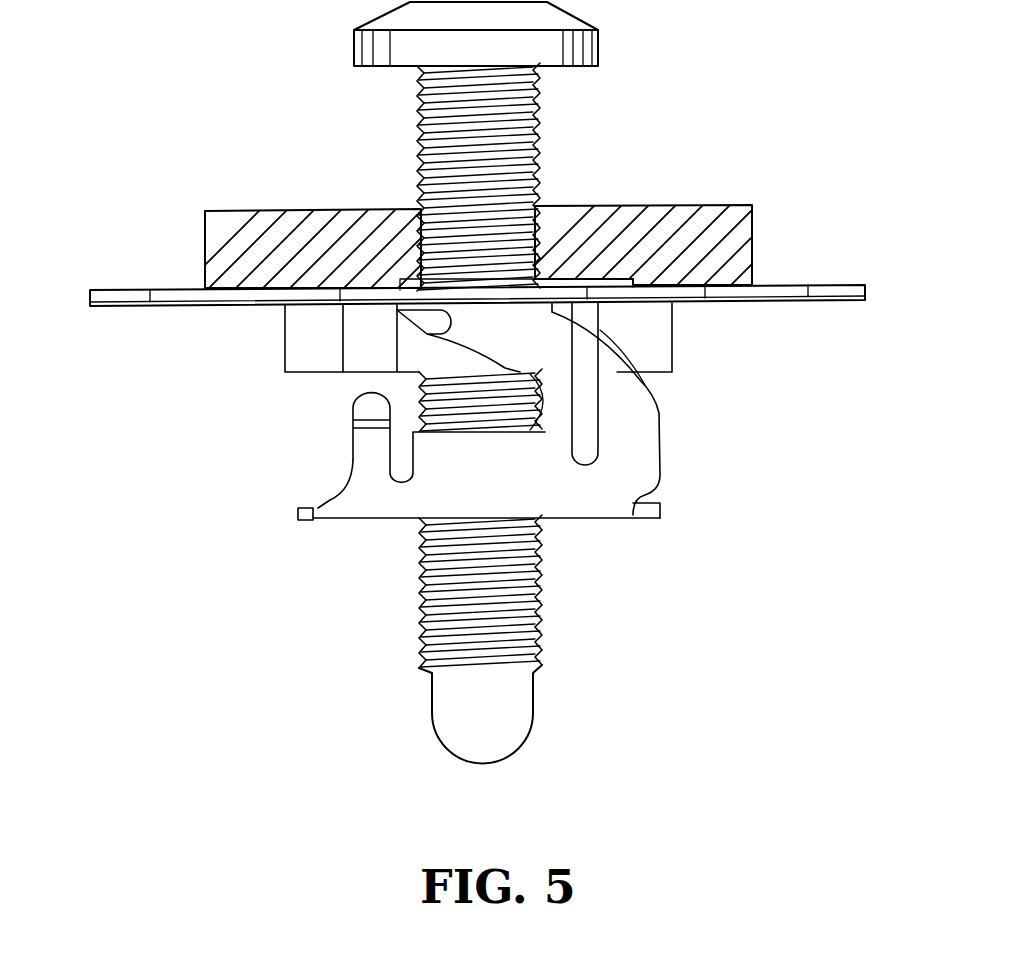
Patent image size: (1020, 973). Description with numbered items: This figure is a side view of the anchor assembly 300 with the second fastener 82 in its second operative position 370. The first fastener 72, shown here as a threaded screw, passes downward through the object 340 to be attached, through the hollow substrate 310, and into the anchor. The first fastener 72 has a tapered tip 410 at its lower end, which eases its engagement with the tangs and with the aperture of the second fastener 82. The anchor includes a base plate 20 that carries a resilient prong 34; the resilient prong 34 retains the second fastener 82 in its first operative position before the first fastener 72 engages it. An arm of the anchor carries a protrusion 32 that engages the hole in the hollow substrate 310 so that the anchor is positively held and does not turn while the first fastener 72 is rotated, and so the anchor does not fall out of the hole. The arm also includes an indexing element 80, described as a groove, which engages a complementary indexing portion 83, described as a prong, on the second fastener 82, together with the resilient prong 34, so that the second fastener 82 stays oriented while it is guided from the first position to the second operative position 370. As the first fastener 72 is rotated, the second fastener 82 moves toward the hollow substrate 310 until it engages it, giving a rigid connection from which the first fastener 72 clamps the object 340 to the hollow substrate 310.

The anchor assembly 300 is at (818, 86).
The first fastener 72 is at (491, 387).
The object 340 is at (745, 230).
The hollow substrate 310 is at (842, 297).
The second operative position 370 is at (283, 333).
The protrusion 32 is at (415, 318).
The resilient prong 34 is at (362, 408).
The base plate 20 is at (479, 427).
The indexing element 80 is at (588, 427).
The second fastener 82 is at (672, 313).
The indexing portion 83 is at (593, 333).
The tapered tip 410 is at (498, 730).